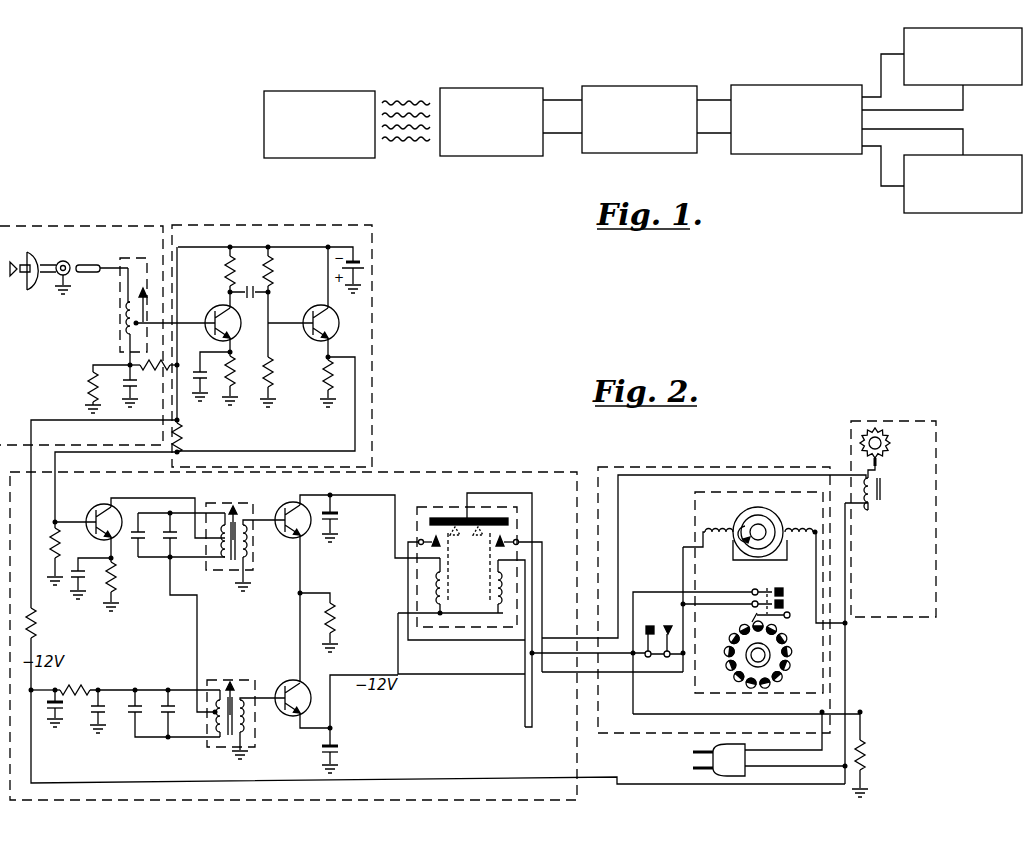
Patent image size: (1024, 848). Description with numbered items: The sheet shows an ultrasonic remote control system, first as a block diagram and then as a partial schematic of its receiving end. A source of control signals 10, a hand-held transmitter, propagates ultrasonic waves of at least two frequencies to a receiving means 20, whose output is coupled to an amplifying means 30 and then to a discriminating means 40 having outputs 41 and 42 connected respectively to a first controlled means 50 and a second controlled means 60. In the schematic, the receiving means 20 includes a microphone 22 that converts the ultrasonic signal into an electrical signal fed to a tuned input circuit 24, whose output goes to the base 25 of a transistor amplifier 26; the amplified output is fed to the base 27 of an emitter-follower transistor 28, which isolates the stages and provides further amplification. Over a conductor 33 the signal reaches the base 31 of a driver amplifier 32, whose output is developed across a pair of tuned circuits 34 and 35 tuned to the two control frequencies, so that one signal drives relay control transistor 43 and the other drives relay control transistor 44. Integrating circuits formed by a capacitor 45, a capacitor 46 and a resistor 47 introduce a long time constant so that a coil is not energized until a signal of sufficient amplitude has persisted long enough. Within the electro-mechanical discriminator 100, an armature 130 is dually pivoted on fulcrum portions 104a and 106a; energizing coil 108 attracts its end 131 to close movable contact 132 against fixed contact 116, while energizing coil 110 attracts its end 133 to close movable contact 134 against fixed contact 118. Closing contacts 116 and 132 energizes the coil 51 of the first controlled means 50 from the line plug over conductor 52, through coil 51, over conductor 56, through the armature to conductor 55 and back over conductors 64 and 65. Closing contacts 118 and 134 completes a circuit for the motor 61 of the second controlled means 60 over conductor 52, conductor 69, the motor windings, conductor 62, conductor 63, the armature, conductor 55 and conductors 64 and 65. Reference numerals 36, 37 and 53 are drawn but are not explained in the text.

In FIG. 1, the source of control signals 10 is at (328, 91).
In FIG. 1, the receiving means 20 is at (487, 88).
In FIG. 2, the receiving means 20 is at (97, 226).
In FIG. 2, the microphone 22 is at (38, 251).
In FIG. 2, the tuned input circuit 24 is at (130, 258).
In FIG. 2, the base of transistor amplifier 25 is at (210, 314).
In FIG. 2, the transistor amplifier 26 is at (222, 306).
In FIG. 2, the base of emitter-follower transistor 27 is at (314, 314).
In FIG. 2, the emitter-follower transistor 28 is at (320, 338).
In FIG. 1, the amplifying means 30 is at (637, 86).
In FIG. 2, the amplifying means 30 is at (372, 288).
In FIG. 2, the base of driver amplifier 31 is at (92, 513).
In FIG. 2, the driver amplifier 32 is at (104, 504).
In FIG. 2, the conductor 33 is at (337, 451).
In FIG. 2, the tuned circuit 34 is at (250, 503).
In FIG. 2, the tuned circuit 35 is at (216, 680).
In FIG. 2, the tuning capacitors 36 is at (196, 503).
In FIG. 2, the feedback conductor 37 is at (197, 618).
In FIG. 1, the discriminating means 40 is at (793, 85).
In FIG. 2, the discriminating means 40 is at (502, 470).
In FIG. 1, the output 41 is at (886, 84).
In FIG. 1, the output 42 is at (886, 128).
In FIG. 2, the relay control transistor 43 is at (287, 505).
In FIG. 2, the relay control transistor 44 is at (286, 689).
In FIG. 2, the capacitor 45 is at (337, 511).
In FIG. 2, the capacitor 46 is at (340, 749).
In FIG. 2, the resistor 47 is at (342, 623).
In FIG. 1, the first controlled means 50 is at (904, 38).
In FIG. 2, the first controlled means 50 is at (878, 421).
In FIG. 2, the coil 51 is at (862, 506).
In FIG. 2, the conductor 52 is at (845, 645).
In FIG. 2, the power plug 53 is at (652, 785).
In FIG. 2, the conductor 55 is at (536, 613).
In FIG. 2, the conductor 56 is at (445, 641).
In FIG. 1, the second controlled means 60 is at (935, 213).
In FIG. 2, the second controlled means 60 is at (790, 467).
In FIG. 2, the motor 61 is at (787, 522).
In FIG. 2, the conductor 62 is at (683, 587).
In FIG. 2, the conductor 63 is at (563, 673).
In FIG. 2, the conductor 64 is at (596, 653).
In FIG. 2, the conductor 65 is at (637, 709).
In FIG. 2, the conductor 69 is at (816, 563).
In FIG. 2, the electro-mechanical discriminator 100 is at (519, 512).
In FIG. 2, the fulcrum portion 104a is at (450, 519).
In FIG. 2, the fulcrum portion 106a is at (493, 519).
In FIG. 2, the electro-magnetic coil 108 is at (436, 580).
In FIG. 2, the electro-magnetic coil 110 is at (505, 578).
In FIG. 2, the fixed contact 116 is at (420, 540).
In FIG. 2, the fixed contact 118 is at (520, 541).
In FIG. 2, the armature 130 is at (462, 518).
In FIG. 2, the end of armature 131 is at (418, 518).
In FIG. 2, the movable contact 132 is at (442, 528).
In FIG. 2, the end of armature 133 is at (510, 522).
In FIG. 2, the movable contact 134 is at (500, 530).